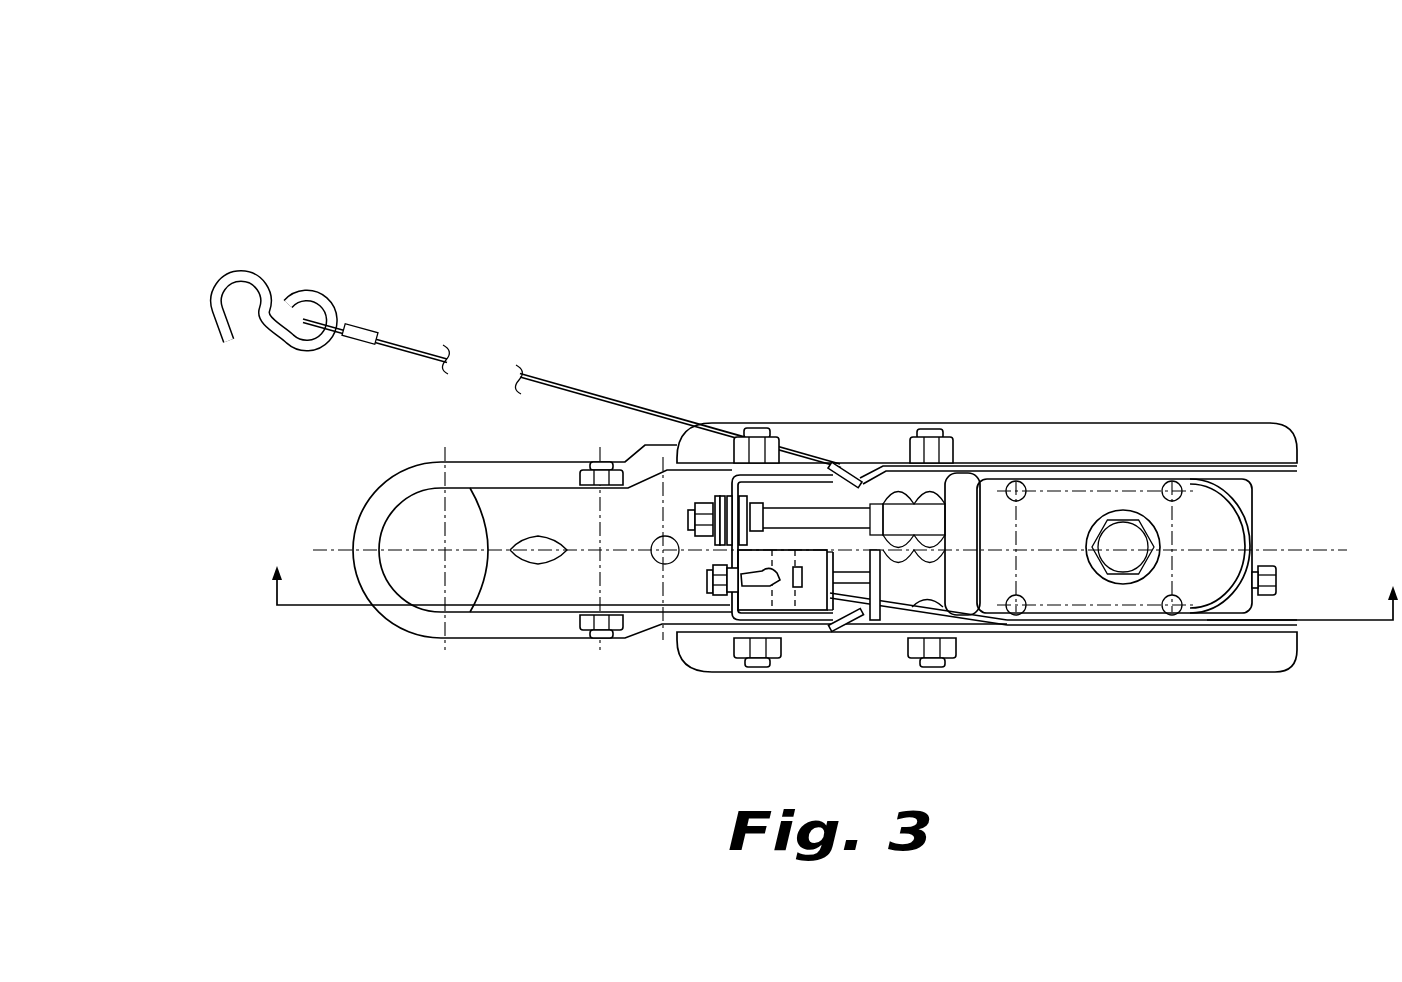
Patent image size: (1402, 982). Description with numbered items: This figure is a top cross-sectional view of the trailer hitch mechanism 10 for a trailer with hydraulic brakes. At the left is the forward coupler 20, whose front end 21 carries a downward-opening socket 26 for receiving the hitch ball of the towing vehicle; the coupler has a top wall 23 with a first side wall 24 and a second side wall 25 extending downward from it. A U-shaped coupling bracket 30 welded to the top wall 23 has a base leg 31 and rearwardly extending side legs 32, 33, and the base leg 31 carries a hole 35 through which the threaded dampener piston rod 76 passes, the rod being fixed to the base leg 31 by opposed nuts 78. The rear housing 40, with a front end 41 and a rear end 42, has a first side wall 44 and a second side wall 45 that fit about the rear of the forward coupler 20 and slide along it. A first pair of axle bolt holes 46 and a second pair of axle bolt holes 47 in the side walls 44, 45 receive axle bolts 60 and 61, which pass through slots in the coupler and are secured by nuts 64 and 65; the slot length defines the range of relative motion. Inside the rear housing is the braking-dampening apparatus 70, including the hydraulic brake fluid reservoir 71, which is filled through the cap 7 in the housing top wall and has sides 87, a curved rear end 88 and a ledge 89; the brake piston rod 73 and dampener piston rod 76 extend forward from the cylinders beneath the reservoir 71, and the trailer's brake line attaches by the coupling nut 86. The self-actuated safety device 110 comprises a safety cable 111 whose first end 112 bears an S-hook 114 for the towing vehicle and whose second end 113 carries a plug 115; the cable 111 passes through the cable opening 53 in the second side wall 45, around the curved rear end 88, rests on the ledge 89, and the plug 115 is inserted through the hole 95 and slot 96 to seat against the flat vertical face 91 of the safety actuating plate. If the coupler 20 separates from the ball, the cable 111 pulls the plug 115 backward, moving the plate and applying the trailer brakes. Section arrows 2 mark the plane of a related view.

The section line 2- 2 is at (826, 575).
The cap 7 is at (1115, 547).
The trailer hitch mechanism 10 is at (388, 98).
The forward coupler 20 is at (537, 622).
The front end 21 is at (354, 550).
The top wall 23 is at (498, 510).
The first side wall 24 is at (600, 640).
The second side wall 25 is at (642, 445).
The socket 26 is at (427, 590).
The U-shaped coupling bracket 30 is at (712, 550).
The base leg 31 is at (712, 566).
The side leg 32 is at (758, 625).
The side leg 33 is at (880, 478).
The second hole 35 is at (738, 485).
The rear housing 40 is at (1186, 449).
The front end 41 is at (836, 470).
The rear end 42 is at (1243, 462).
The first side wall 44 is at (1193, 632).
The second side wall 45 is at (1120, 466).
The first pair of aligned axle bolt holes 46 is at (818, 462).
The second pair of aligned axle bolt holes 47 is at (945, 455).
The cable opening 53 is at (880, 505).
The axle bolt 60 is at (756, 667).
The axle bolt 61 is at (931, 667).
The nut 64 is at (766, 505).
The nut 65 is at (920, 500).
The braking-dampening apparatus 70 is at (1264, 485).
The hydraulic brake fluid reservoir 71 is at (1090, 510).
The brake piston rod 73 is at (708, 594).
The dampener piston rod 76 is at (689, 518).
The opposed nuts 78 is at (688, 506).
The coupling nut 86 is at (1277, 580).
The sides 87 is at (1145, 630).
The curved rear end 88 is at (1248, 515).
The ledge 89 is at (1090, 630).
The flat vertical face 91 is at (803, 578).
The first hole 95 is at (800, 605).
The slot 96 is at (770, 570).
The self-actuated safety device 110 is at (404, 332).
The safety cable 111 is at (362, 330).
The first end 112 is at (442, 350).
The second end 113 is at (876, 620).
The S-hook 114 is at (212, 283).
The plug 115 is at (740, 605).